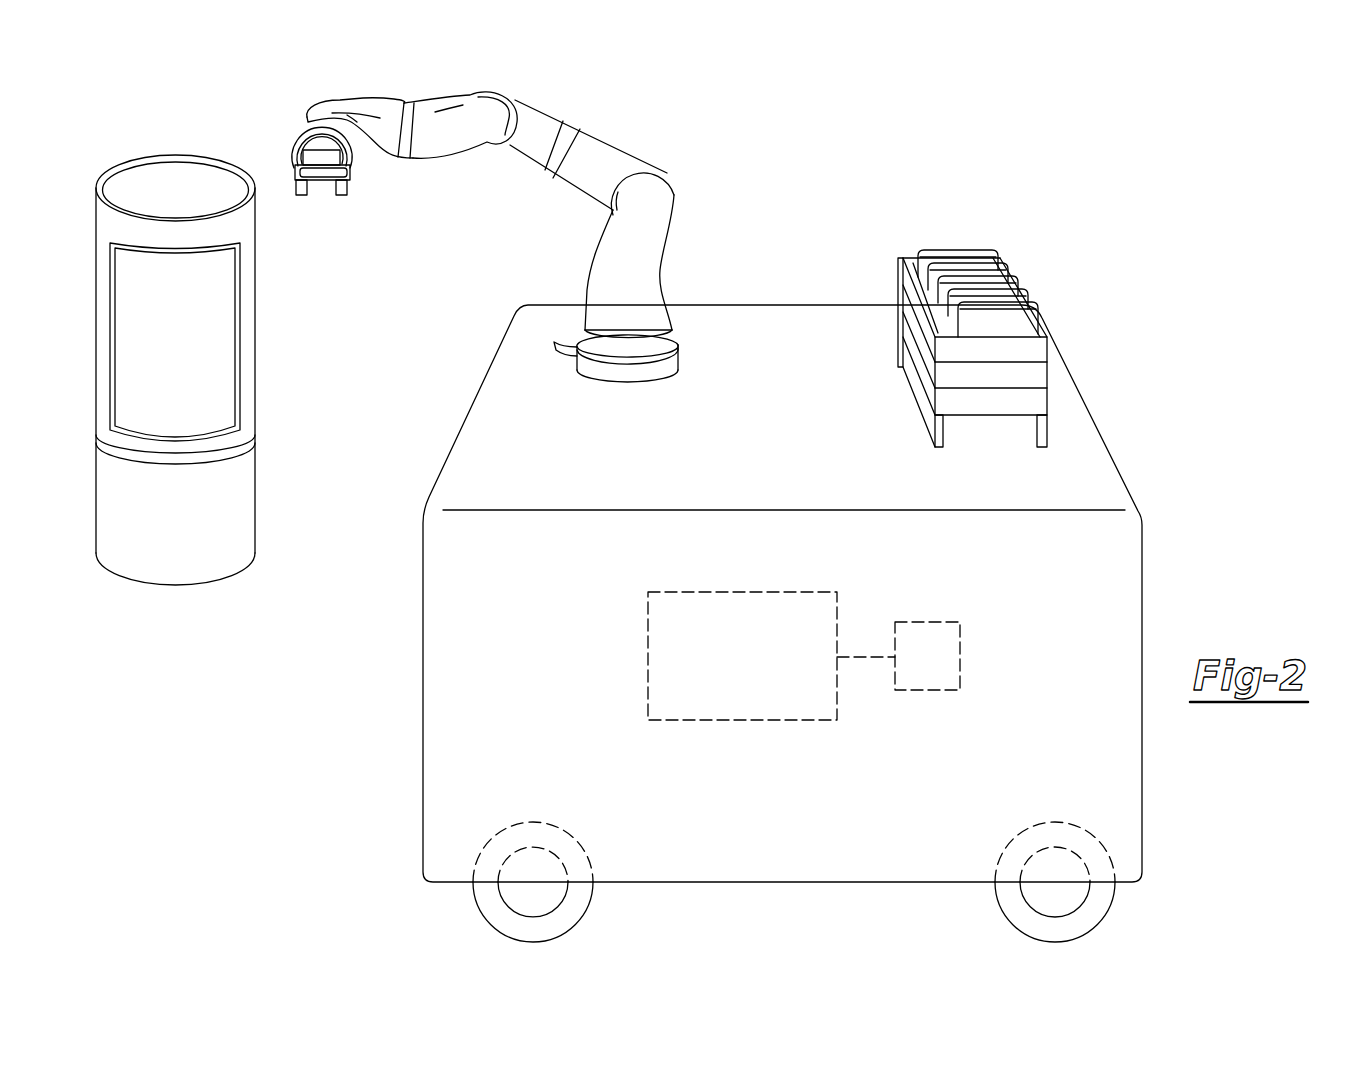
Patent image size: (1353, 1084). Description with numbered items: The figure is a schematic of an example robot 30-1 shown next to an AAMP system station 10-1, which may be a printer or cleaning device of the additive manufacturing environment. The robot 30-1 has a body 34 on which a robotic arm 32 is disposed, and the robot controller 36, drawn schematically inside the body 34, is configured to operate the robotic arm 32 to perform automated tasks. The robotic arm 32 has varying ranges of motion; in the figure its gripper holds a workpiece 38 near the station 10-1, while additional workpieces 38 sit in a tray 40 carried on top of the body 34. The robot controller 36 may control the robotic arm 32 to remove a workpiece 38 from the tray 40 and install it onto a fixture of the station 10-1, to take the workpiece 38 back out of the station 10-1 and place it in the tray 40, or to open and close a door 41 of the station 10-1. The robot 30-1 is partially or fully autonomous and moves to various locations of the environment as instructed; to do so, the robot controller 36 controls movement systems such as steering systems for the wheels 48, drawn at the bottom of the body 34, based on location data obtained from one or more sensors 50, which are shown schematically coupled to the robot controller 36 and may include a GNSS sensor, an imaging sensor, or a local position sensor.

The AAMP system station 10-1 is at (203, 183).
The door 41 is at (215, 265).
The robot 30-1 is at (937, 145).
The robotic arm 32 is at (672, 122).
The body 34 is at (362, 663).
The robot controller 36 is at (813, 592).
The workpiece 38 is at (973, 258).
The tray 40 is at (1041, 326).
The wheels 48 is at (587, 908).
The sensors 50 is at (962, 629).